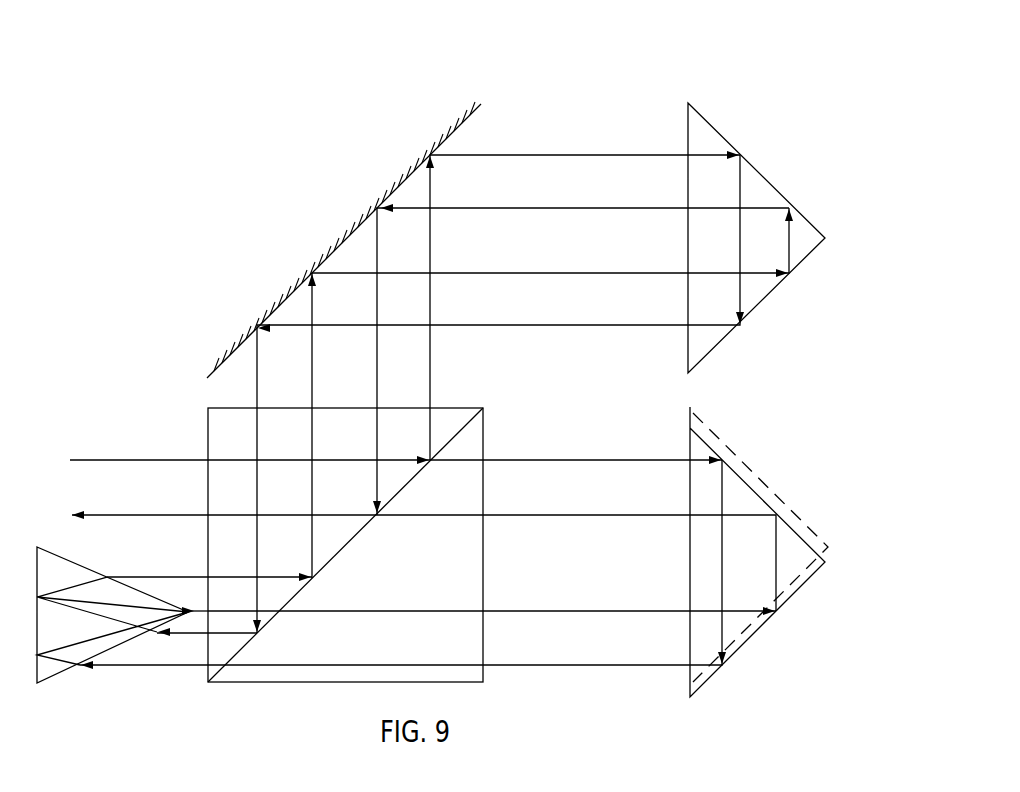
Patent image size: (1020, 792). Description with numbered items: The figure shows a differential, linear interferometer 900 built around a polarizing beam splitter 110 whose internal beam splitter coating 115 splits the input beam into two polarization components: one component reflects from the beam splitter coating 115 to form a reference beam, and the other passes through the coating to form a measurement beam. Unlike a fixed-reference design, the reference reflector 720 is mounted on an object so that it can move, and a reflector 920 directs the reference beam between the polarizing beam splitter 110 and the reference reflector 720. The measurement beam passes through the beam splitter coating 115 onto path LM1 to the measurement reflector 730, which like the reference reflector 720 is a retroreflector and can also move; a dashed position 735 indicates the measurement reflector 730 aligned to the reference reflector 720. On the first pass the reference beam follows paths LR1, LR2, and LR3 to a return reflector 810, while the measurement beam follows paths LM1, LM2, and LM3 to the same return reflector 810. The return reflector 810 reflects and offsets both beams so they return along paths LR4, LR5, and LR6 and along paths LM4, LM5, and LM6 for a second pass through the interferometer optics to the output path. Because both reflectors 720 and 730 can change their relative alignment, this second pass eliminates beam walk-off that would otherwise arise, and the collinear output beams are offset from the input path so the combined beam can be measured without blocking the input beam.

The differential linear interferometer 900 is at (100, 236).
The reflector 920 is at (343, 208).
The reference reflector 720 is at (757, 165).
The measurement reflector 730 is at (768, 625).
The aligned position of measurement reflector 735 is at (775, 492).
The polarizing beam splitter 110 is at (455, 650).
The beam splitter coating 115 is at (318, 574).
The return reflector 810 is at (52, 684).
The reference beam path LR1 is at (428, 452).
The reference beam path LR2 is at (256, 452).
The reference beam path LR3 is at (203, 633).
The reference beam path LR4 is at (198, 576).
The reference beam path LR5 is at (311, 452).
The reference beam path LR6 is at (372, 452).
The measurement beam path LM1 is at (605, 458).
The measurement beam path LM2 is at (605, 662).
The measurement beam path LM3 is at (200, 667).
The measurement beam path LM4 is at (205, 610).
The measurement beam path LM5 is at (605, 609).
The measurement beam path LM6 is at (605, 513).